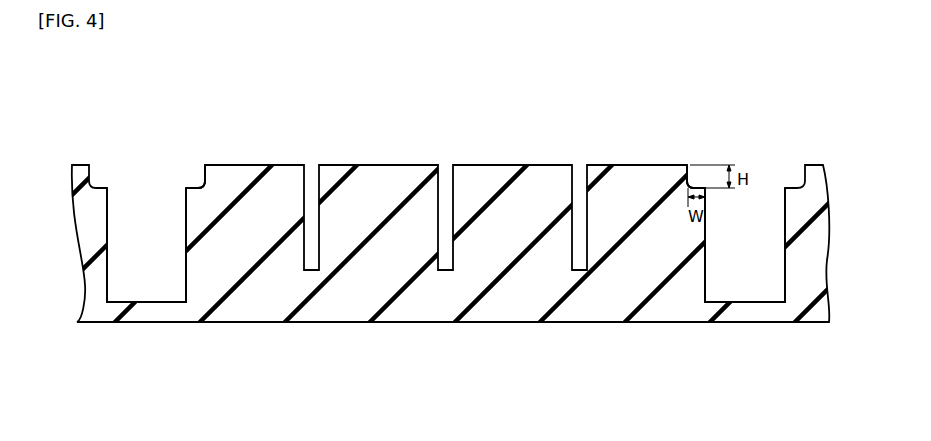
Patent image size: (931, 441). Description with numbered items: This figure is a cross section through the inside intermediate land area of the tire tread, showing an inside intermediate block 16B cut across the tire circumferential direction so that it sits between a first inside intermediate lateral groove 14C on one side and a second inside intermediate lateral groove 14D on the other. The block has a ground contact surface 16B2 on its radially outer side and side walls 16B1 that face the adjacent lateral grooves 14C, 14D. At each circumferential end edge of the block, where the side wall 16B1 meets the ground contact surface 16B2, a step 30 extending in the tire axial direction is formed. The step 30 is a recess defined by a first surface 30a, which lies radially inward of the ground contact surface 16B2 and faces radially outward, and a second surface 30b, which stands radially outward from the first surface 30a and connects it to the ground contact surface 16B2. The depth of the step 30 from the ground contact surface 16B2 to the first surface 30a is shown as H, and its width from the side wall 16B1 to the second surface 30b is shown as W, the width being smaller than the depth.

The first inside intermediate lateral groove 14C is at (752, 235).
The second inside intermediate lateral groove 14D is at (150, 215).
The inside intermediate block 16B is at (475, 192).
The side wall 16B1 is at (186, 270).
The ground contact surface 16B2 is at (632, 165).
The step 30 is at (218, 98).
The first surface 30a is at (187, 187).
The second surface 30b is at (203, 182).